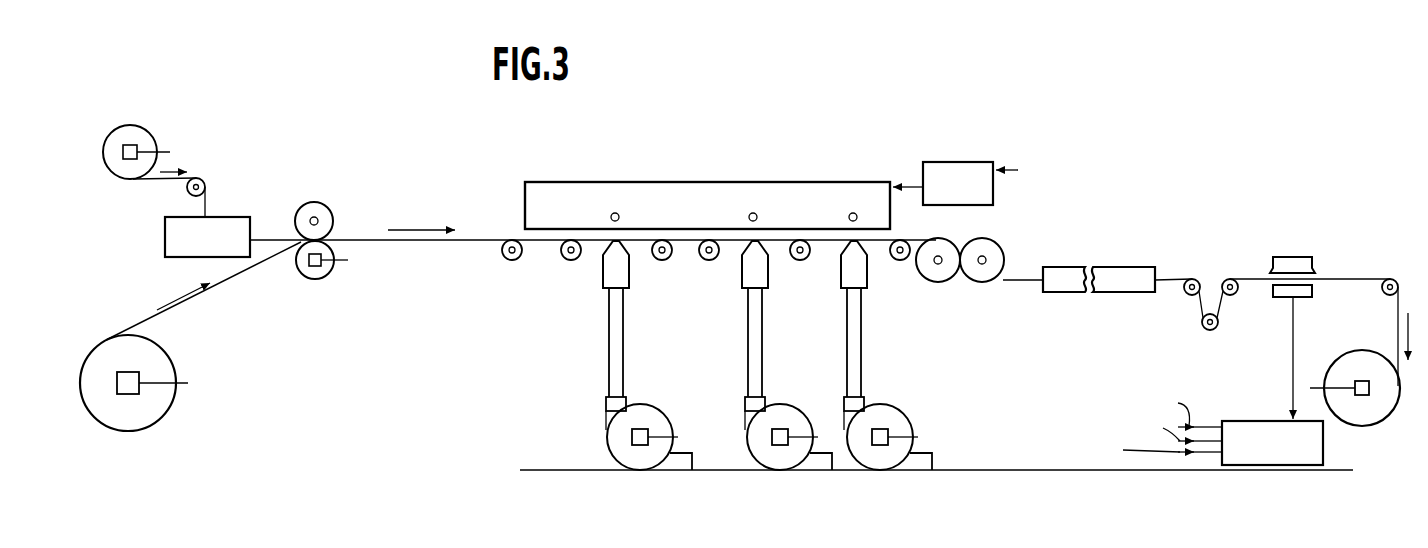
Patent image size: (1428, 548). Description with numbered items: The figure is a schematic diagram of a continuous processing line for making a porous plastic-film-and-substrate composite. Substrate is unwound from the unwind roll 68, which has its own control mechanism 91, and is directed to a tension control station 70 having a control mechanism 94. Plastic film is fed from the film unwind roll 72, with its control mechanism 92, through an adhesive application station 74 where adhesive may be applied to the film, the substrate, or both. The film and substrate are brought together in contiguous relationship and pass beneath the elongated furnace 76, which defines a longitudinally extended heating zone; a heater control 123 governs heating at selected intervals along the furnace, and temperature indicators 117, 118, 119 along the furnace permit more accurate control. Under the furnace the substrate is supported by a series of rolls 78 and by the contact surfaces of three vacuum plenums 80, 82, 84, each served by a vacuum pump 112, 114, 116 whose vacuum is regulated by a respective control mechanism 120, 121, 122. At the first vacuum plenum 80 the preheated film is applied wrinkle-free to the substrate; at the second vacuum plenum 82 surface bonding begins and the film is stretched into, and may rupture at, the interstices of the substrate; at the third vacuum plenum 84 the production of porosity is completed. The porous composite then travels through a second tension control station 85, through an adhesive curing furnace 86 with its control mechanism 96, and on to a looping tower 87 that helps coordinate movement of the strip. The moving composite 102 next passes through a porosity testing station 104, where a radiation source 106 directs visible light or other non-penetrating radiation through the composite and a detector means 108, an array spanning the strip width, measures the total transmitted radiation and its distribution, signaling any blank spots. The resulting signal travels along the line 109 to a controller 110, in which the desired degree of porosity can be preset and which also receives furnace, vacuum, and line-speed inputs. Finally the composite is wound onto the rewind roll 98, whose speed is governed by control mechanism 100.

The unwind roll 68 is at (172, 364).
The tension control station 70 is at (283, 270).
The film unwind roll 72 is at (143, 128).
The adhesive application station 74 is at (163, 229).
The elongated furnace 76 is at (598, 180).
The rolls 78 is at (512, 261).
The vacuum plenum 80 is at (629, 280).
The vacuum plenum 82 is at (767, 277).
The vacuum plenum 84 is at (867, 277).
The tension control station 85 is at (954, 284).
The adhesive curing furnace 86 is at (1105, 267).
The looping tower 87 is at (1205, 267).
The control mechanism 91 is at (118, 396).
The control mechanism 92 is at (127, 145).
The control mechanism 94 is at (328, 275).
The control mechanism 96 is at (992, 282).
The rewind roll 98 is at (1357, 381).
The control mechanism 100 is at (1362, 380).
The composite 102 is at (1252, 279).
The porosity testing station 104 is at (1299, 261).
The radiation source 106 is at (1308, 257).
The detector means 108 is at (1282, 297).
The line 109 is at (1293, 367).
The controller 110 is at (1238, 421).
The first vacuum blower 112 is at (651, 405).
The second vacuum blower 114 is at (781, 405).
The third vacuum blower 116 is at (891, 405).
The temperature indicator 117 is at (611, 215).
The temperature indicator 118 is at (749, 215).
The temperature indicator 119 is at (849, 214).
The control mechanism 120 is at (632, 441).
The control mechanism 121 is at (772, 441).
The control mechanism 122 is at (888, 443).
The heater control 123 is at (962, 162).